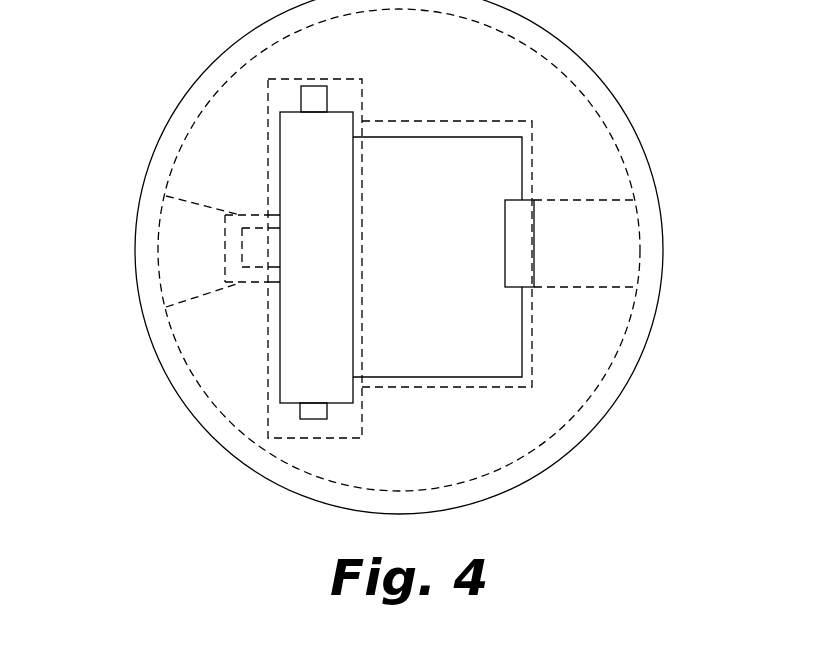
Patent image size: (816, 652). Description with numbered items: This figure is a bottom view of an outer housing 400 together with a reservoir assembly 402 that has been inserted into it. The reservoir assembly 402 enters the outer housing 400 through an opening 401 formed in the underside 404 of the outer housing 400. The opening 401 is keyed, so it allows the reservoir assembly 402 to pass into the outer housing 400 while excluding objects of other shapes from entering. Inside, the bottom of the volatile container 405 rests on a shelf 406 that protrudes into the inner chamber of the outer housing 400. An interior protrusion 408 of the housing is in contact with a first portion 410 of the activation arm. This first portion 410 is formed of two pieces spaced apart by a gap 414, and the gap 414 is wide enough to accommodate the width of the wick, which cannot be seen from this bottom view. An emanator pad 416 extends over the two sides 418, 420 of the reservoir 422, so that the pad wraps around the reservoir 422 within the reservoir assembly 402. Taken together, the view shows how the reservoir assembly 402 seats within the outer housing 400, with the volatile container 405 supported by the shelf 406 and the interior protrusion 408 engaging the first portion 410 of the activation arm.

The outer housing 400 is at (175, 131).
The opening 401 is at (452, 121).
The reservoir assembly 402 is at (257, 176).
The underside 404 is at (588, 353).
The volatile container 405 is at (444, 260).
The shelf 406 is at (596, 250).
The interior protrusion 408 is at (204, 287).
The first portion of the activation arm 410 is at (249, 283).
The gap 414 is at (222, 222).
The emanator pad 416 is at (320, 419).
The side of the reservoir 418 is at (340, 404).
The side of the reservoir 420 is at (352, 112).
The reservoir 422 is at (333, 199).